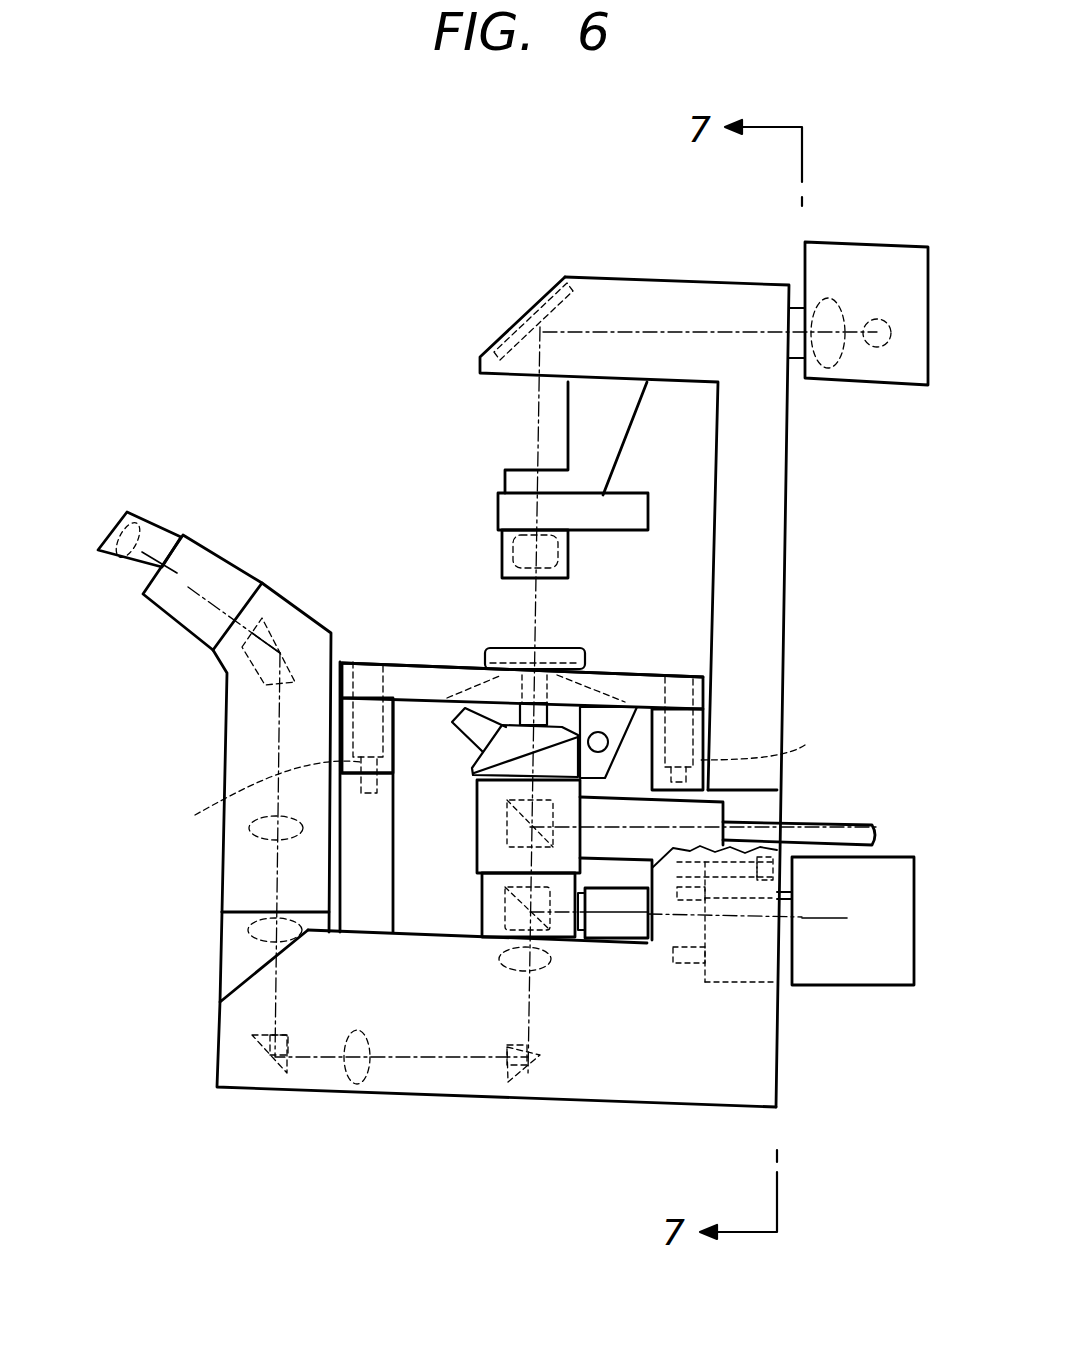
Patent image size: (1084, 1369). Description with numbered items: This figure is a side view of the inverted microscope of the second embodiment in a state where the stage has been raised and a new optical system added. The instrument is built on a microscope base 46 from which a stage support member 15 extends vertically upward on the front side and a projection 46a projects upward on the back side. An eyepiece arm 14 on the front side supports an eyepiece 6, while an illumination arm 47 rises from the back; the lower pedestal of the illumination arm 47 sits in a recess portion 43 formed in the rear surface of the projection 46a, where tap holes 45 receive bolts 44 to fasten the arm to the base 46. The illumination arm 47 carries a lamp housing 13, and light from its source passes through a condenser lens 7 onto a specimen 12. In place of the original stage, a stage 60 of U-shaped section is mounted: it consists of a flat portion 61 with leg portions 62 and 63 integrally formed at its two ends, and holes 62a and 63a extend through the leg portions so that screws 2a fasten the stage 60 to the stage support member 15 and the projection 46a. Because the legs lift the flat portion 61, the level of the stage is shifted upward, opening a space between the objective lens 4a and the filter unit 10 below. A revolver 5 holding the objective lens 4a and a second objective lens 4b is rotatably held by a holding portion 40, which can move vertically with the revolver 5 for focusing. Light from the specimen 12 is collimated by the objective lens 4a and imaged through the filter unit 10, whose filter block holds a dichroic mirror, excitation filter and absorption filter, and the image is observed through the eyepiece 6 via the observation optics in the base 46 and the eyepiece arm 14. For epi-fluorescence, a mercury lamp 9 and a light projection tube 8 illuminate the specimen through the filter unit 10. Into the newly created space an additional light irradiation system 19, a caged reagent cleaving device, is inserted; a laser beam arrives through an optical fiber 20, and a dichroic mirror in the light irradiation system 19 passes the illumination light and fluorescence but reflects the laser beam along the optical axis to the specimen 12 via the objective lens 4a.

The screws 2a is at (497, 781).
The objective lens 4a is at (550, 715).
The objective lens 4b is at (463, 732).
The revolver 5 is at (472, 762).
The eyepiece 6 is at (147, 523).
The condenser lens 7 is at (500, 547).
The light projection tube 8 is at (615, 945).
The mercury lamp 9 is at (875, 978).
The filter unit 10 is at (562, 940).
The specimen 12 is at (530, 660).
The lamp housing 13 is at (900, 243).
The eyepiece arm 14 is at (226, 712).
The stage support member 15 is at (340, 853).
The light irradiation system 19 is at (485, 857).
The optical fiber 20 is at (857, 825).
The holding portion 40 is at (512, 768).
The recess portion 43 is at (740, 982).
The bolts 44 is at (793, 873).
The tap holes 45 is at (682, 965).
The microscope base 46 is at (235, 1095).
The projection 46a is at (780, 805).
The illumination arm 47 is at (790, 482).
The stage 60 is at (407, 652).
The flat portion 61 is at (443, 677).
The leg portion 62 is at (345, 737).
The hole 62a is at (370, 673).
The leg portion 63 is at (700, 733).
The hole 63a is at (683, 693).